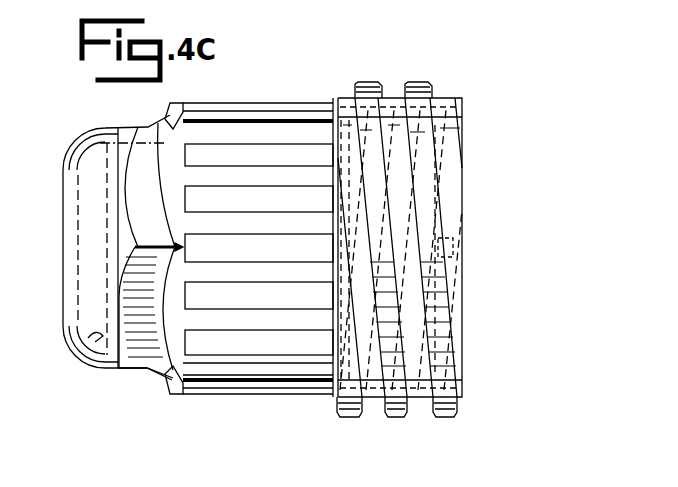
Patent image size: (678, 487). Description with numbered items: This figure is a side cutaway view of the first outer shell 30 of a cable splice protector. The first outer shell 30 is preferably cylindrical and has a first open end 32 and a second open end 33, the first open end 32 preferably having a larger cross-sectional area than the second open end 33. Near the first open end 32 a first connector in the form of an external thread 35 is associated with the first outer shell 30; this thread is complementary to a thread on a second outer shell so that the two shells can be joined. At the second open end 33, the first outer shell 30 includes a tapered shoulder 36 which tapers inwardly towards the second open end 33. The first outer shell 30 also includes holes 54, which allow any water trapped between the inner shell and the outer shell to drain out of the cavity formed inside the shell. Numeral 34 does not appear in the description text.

The first outer shell 30 is at (243, 392).
The first open end 32 is at (462, 168).
The second open end 33 is at (63, 247).
The thread 34 is at (388, 98).
The external thread 35 is at (415, 83).
The tapered shoulder 36 is at (97, 133).
The holes 54 is at (177, 110).